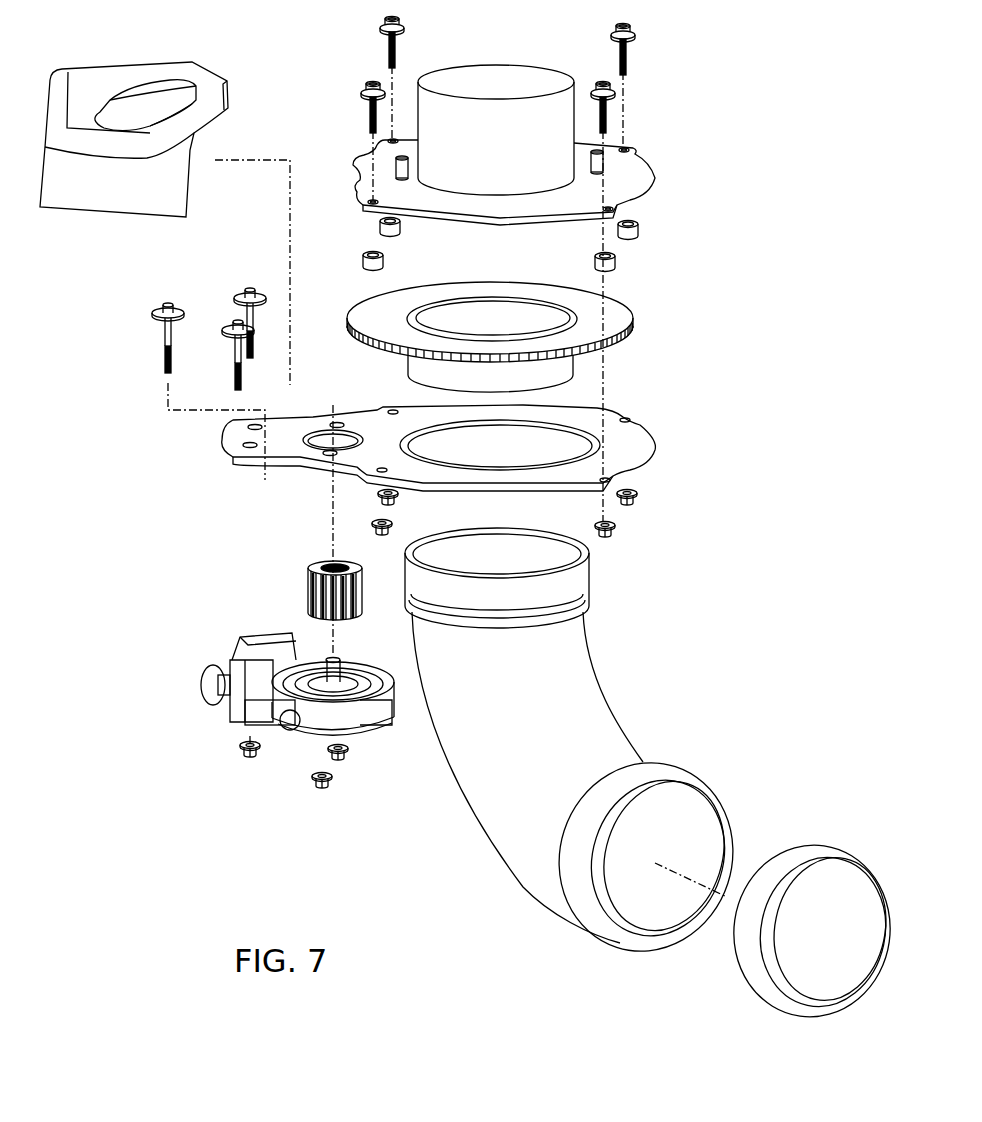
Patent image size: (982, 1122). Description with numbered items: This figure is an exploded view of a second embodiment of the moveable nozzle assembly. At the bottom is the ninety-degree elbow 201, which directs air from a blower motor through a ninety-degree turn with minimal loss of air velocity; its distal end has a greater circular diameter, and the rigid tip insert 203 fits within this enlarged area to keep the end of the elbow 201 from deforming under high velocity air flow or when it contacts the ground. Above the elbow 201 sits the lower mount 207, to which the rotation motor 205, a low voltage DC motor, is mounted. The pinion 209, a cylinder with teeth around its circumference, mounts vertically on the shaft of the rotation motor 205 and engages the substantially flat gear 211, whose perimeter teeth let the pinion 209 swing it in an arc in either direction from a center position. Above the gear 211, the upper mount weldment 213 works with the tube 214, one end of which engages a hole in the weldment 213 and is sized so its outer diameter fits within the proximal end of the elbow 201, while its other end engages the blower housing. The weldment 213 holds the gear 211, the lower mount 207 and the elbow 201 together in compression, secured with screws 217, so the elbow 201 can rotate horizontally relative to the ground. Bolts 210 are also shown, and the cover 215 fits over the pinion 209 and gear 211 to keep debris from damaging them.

The 90-degree elbow 201 is at (587, 697).
The rigid tip insert 203 is at (795, 853).
The rotation motor 205 is at (255, 707).
The lower mount 207 is at (227, 435).
The pinion 209 is at (308, 583).
The bolts 210 is at (165, 331).
The gear 211 is at (627, 318).
The upper mount weldment 213 is at (642, 177).
The tube 214 is at (500, 72).
The cover 215 is at (127, 72).
The screws 217 is at (630, 57).